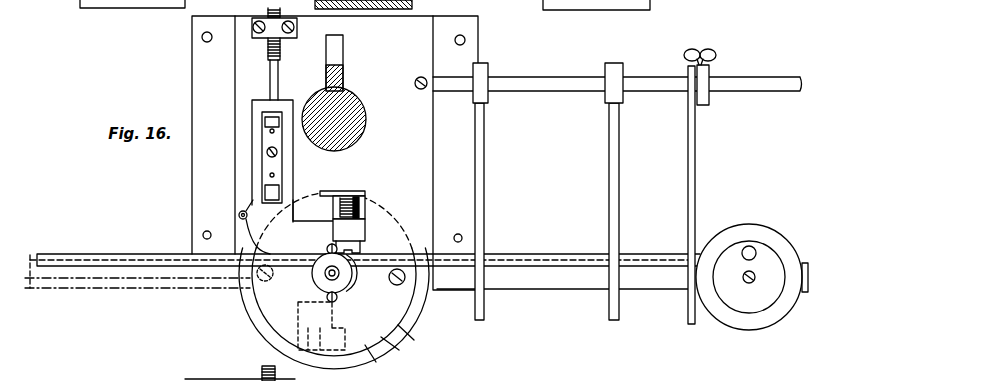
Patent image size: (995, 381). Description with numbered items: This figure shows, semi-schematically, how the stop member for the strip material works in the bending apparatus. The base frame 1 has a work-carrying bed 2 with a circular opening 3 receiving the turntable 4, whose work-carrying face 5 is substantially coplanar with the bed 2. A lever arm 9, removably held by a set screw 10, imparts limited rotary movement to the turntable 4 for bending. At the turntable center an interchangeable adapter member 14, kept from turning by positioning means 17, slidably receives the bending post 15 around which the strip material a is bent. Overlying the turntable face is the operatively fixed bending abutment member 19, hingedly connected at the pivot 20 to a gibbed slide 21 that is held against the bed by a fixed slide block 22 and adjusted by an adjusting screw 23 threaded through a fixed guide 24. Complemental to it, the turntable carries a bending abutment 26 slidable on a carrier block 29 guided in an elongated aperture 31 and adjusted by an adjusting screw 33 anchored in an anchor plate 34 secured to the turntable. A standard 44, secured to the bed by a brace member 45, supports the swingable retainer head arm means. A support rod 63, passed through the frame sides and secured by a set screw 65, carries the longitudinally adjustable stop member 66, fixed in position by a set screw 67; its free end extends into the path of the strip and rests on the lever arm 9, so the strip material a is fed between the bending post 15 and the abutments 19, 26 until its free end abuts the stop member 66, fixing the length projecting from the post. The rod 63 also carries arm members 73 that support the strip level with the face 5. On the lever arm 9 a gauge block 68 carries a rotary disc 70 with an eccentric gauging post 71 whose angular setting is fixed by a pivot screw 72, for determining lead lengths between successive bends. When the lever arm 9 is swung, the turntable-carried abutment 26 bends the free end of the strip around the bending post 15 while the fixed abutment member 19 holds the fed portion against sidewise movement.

The base frame 1 is at (433, 210).
The work-carrying bed 2 is at (237, 98).
The circular opening 3 is at (377, 364).
The turntable 4 is at (400, 351).
The work-carrying face 5 is at (415, 341).
The lever arm 9 is at (546, 289).
The set screw 10 is at (397, 285).
The adapter member 14 is at (355, 284).
The bending post 15 is at (325, 273).
The positioning means 17 is at (338, 298).
The bending abutment member 19 is at (305, 232).
The hinge pivot 20 is at (239, 214).
The gibbed slide 21 is at (252, 132).
The slide block 22 is at (265, 161).
The adjusting screw 23 is at (281, 14).
The fixed guide 24 is at (291, 37).
The bending abutment 26 is at (362, 248).
The carrier block 29 is at (366, 227).
The elongated aperture 31 is at (355, 266).
The adjusting screw 33 is at (366, 205).
The anchor plate 34 is at (347, 191).
The standard 44 is at (366, 124).
The brace member 45 is at (344, 55).
The support rod 63 is at (546, 79).
The set screw 65 is at (415, 82).
The stop member 66 is at (696, 195).
The set screw 67 is at (703, 52).
The gauge block 68 is at (729, 324).
The rotary disc 70 is at (766, 250).
The gauging post 71 is at (749, 246).
The pivot screw 72 is at (746, 284).
The arm member 73 is at (485, 193).
The strip material a is at (107, 254).